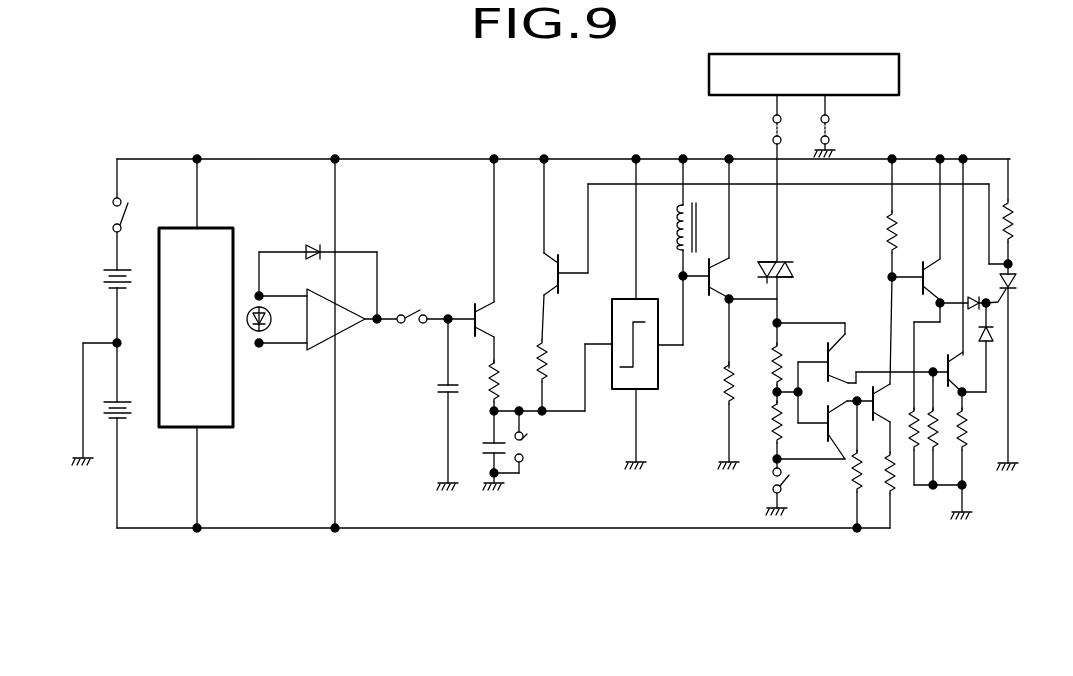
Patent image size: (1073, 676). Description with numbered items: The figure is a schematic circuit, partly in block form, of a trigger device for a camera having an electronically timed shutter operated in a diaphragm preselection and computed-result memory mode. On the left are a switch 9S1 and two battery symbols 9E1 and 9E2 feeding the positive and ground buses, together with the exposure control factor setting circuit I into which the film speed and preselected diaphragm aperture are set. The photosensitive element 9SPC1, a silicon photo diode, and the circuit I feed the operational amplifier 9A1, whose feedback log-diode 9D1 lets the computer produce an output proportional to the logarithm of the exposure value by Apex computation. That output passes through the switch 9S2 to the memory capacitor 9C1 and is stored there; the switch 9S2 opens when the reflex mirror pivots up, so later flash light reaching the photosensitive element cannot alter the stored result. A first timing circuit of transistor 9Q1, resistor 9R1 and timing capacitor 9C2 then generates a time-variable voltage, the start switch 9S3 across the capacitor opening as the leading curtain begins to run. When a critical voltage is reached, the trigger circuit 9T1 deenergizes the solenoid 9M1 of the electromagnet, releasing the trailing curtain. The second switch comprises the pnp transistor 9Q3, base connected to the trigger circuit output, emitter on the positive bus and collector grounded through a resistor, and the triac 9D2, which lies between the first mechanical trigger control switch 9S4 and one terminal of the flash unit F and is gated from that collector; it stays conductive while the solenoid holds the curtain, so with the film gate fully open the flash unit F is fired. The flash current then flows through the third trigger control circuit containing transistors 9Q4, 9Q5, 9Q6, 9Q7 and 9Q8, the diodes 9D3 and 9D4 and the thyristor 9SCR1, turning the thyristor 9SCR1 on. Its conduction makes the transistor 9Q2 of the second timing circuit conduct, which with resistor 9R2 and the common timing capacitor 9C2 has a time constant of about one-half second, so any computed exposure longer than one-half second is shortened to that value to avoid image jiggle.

The power switch 9S1 is at (105, 215).
The battery 9E1 is at (104, 282).
The battery 9E2 is at (128, 420).
The exposure control factor setting circuit I is at (215, 210).
The operational amplifier 9A1 is at (336, 319).
The photosensitive element 9SPC1 is at (256, 334).
The feedback diode 9D1 is at (309, 237).
The switch 9S2 is at (412, 303).
The memory capacitor 9C1 is at (433, 404).
The transistor 9Q1 is at (495, 248).
The resistor 9R1 is at (508, 385).
The timing capacitor 9C2 is at (478, 450).
The start switch 9S3 is at (533, 444).
The transistor 9Q2 is at (551, 227).
The resistor 9R2 is at (557, 353).
The trigger circuit 9T1 is at (648, 283).
The solenoid 9M1 is at (670, 217).
The pnp transistor 9Q3 is at (716, 228).
The flash unit F is at (899, 75).
The triac 9D2 is at (793, 271).
The first mechanical trigger control switch 9S4 is at (762, 491).
The transistor 9Q4 is at (833, 358).
The transistor 9Q6 is at (831, 430).
The transistor 9Q7 is at (890, 418).
The transistor 9Q8 is at (925, 229).
The diode 9D4 is at (975, 288).
The transistor 9Q5 is at (964, 372).
The diode 9D3 is at (994, 330).
The thyristor 9SCR1 is at (1025, 314).